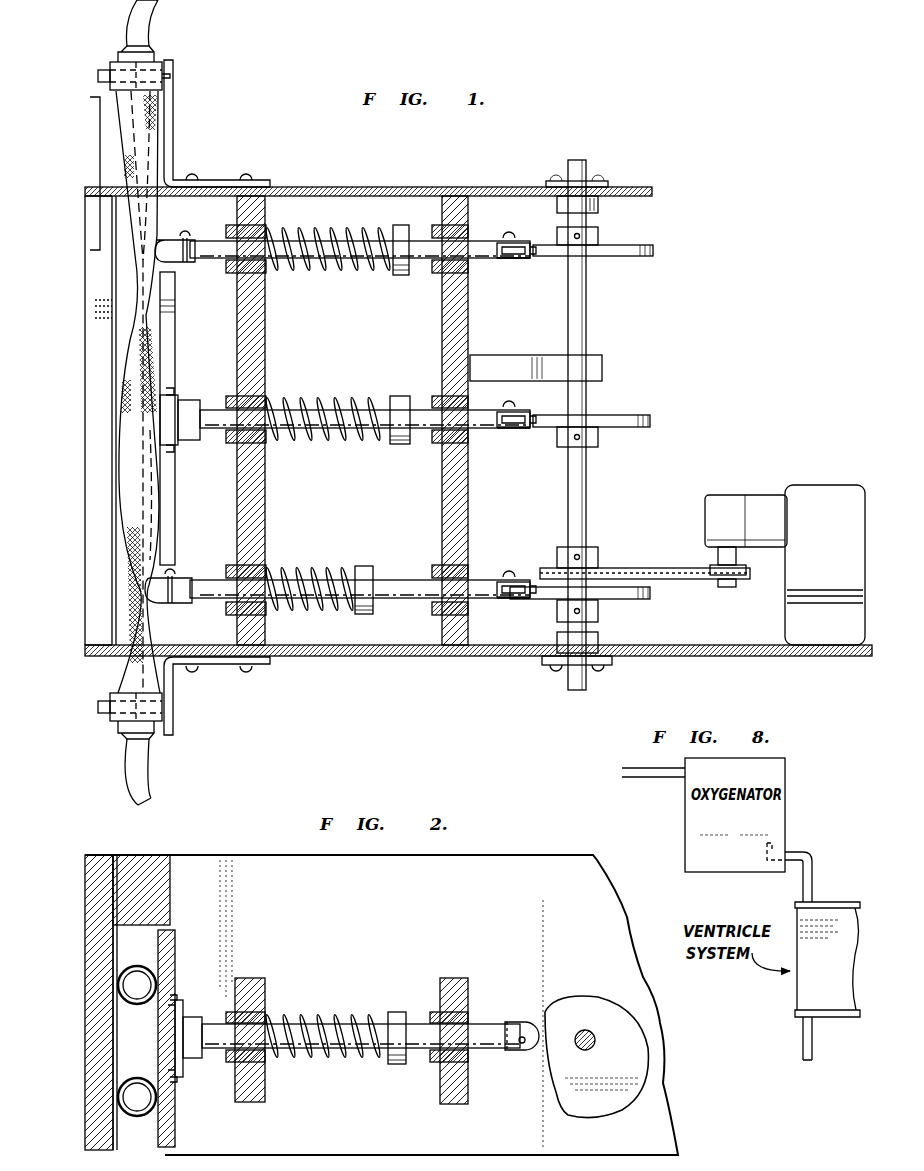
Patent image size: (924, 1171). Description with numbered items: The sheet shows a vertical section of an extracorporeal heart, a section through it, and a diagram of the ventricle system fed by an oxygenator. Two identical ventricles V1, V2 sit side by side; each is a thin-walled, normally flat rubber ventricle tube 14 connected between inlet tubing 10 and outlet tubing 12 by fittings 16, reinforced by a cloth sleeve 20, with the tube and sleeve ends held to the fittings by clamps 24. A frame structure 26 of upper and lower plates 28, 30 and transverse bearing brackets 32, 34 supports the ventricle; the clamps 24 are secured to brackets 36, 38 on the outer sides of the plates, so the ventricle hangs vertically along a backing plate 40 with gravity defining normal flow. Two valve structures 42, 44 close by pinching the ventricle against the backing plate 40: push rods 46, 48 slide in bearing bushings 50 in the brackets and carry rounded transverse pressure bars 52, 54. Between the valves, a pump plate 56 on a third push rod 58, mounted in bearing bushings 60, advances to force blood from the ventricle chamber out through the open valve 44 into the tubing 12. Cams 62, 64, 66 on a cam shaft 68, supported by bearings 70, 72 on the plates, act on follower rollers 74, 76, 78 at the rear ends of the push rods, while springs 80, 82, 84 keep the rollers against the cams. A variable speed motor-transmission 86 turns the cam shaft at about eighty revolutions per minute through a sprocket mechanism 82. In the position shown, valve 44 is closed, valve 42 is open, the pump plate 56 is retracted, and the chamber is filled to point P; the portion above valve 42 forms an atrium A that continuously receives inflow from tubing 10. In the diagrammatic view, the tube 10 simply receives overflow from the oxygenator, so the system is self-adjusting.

In FIG. 1, the tubing 10 is at (150, 22).
In FIG. 8, the tubing 10 is at (812, 860).
In FIG. 1, the tubing 12 is at (150, 780).
In FIG. 8, the tubing 12 is at (803, 1043).
In FIG. 1, the ventricle tube 14 is at (146, 158).
In FIG. 2, the ventricle tube 14 is at (138, 975).
In FIG. 1, the fitting 16 is at (152, 54).
In FIG. 1, the cloth sleeve 20 is at (155, 328).
In FIG. 2, the cloth sleeve 20 is at (150, 1010).
In FIG. 1, the clamp 24 is at (128, 62).
In FIG. 1, the frame structure 26 is at (433, 186).
In FIG. 1, the upper plate 28 is at (325, 189).
In FIG. 1, the lower plate 30 is at (345, 656).
In FIG. 2, the lower plate 30 is at (381, 1005).
In FIG. 1, the bearing bracket 32 is at (265, 342).
In FIG. 2, the bearing bracket 32 is at (265, 985).
In FIG. 1, the bearing bracket 34 is at (468, 330).
In FIG. 2, the bearing bracket 34 is at (440, 1090).
In FIG. 1, the bracket 36 is at (174, 108).
In FIG. 1, the bracket 38 is at (173, 688).
In FIG. 1, the backing plate 40 is at (112, 290).
In FIG. 2, the backing plate 40 is at (113, 1020).
In FIG. 1, the valve structure 42 is at (160, 240).
In FIG. 1, the valve structure 44 is at (160, 612).
In FIG. 1, the push rod 46 is at (245, 250).
In FIG. 1, the push rod 48 is at (245, 590).
In FIG. 1, the bearing bushing 50 is at (255, 272).
In FIG. 1, the pressure bar 52 is at (170, 265).
In FIG. 1, the pressure bar 54 is at (160, 572).
In FIG. 1, the pump plate 56 is at (168, 496).
In FIG. 2, the pump plate 56 is at (166, 1110).
In FIG. 1, the third push rod 58 is at (210, 418).
In FIG. 2, the third push rod 58 is at (214, 1034).
In FIG. 1, the bearing bushing 60 is at (255, 443).
In FIG. 2, the bearing bushing 60 is at (250, 1062).
In FIG. 1, the cam 62 is at (630, 256).
In FIG. 1, the cam 64 is at (625, 599).
In FIG. 1, the cam 66 is at (625, 427).
In FIG. 2, the cam 66 is at (605, 990).
In FIG. 1, the cam shaft 68 is at (586, 500).
In FIG. 2, the cam shaft 68 is at (592, 1046).
In FIG. 1, the bearing 70 is at (580, 205).
In FIG. 1, the bearing 72 is at (558, 640).
In FIG. 1, the follower roller 74 is at (512, 240).
In FIG. 1, the follower roller 76 is at (500, 578).
In FIG. 1, the follower roller 78 is at (510, 431).
In FIG. 2, the follower roller 78 is at (520, 1052).
In FIG. 1, the spring 80 is at (352, 270).
In FIG. 1, the spring 82 is at (320, 570).
In FIG. 1, the spring 84 is at (355, 398).
In FIG. 2, the spring 84 is at (350, 1013).
In FIG. 1, the variable speed motor-transmission 86 is at (820, 490).
In FIG. 1, the atrium A is at (84, 173).
In FIG. 1, the point P is at (130, 352).
In FIG. 1, the ventricle V1 is at (130, 490).
In FIG. 2, the ventricle V1 is at (110, 1092).
In FIG. 2, the ventricle V2 is at (110, 982).